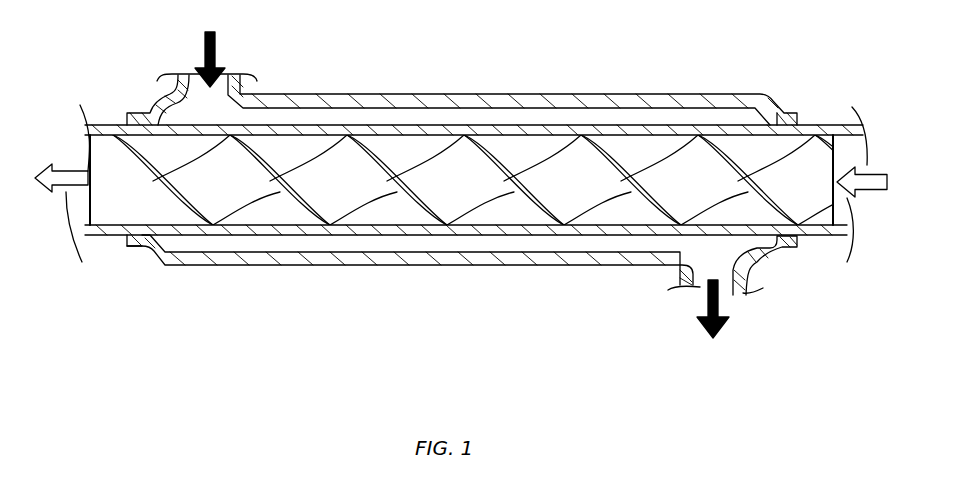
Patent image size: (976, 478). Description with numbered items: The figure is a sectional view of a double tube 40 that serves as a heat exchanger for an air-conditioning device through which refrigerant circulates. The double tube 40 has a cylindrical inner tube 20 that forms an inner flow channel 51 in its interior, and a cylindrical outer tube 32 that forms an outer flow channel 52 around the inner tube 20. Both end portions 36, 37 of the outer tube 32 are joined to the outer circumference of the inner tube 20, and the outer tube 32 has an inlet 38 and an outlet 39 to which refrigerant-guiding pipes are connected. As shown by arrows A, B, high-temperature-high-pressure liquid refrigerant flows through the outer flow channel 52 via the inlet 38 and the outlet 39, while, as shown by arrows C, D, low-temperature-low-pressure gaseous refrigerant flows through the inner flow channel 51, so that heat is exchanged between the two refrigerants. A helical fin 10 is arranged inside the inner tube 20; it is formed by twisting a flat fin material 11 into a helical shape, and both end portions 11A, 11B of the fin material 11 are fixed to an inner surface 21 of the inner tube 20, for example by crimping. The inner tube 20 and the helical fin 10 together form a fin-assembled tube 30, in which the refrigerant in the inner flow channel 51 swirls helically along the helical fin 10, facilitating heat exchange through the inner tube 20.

The helical fin 10 is at (466, 220).
The fin material 11 is at (383, 210).
The end portion of the fin material 11A is at (830, 235).
The end portion of the fin material 11B is at (93, 222).
The inner tube 20 is at (258, 237).
The inner surface 21 is at (286, 225).
The fin-assembled tube 30 is at (693, 125).
The outer tube 32 is at (531, 263).
The end portion of the outer tube 36 is at (790, 116).
The end portion of the outer tube 37 is at (137, 248).
The inlet 38 is at (172, 88).
The outlet 39 is at (753, 284).
The double tube 40 is at (108, 100).
The inner flow channel 51 is at (623, 216).
The outer flow channel 52 is at (295, 120).
The arrow A is at (204, 50).
The arrow B is at (706, 307).
The arrow C is at (878, 192).
The arrow D is at (66, 190).